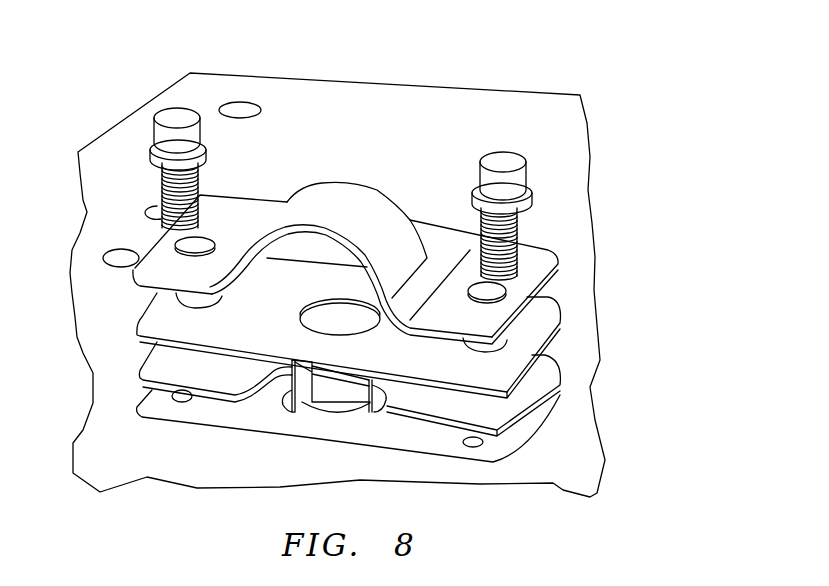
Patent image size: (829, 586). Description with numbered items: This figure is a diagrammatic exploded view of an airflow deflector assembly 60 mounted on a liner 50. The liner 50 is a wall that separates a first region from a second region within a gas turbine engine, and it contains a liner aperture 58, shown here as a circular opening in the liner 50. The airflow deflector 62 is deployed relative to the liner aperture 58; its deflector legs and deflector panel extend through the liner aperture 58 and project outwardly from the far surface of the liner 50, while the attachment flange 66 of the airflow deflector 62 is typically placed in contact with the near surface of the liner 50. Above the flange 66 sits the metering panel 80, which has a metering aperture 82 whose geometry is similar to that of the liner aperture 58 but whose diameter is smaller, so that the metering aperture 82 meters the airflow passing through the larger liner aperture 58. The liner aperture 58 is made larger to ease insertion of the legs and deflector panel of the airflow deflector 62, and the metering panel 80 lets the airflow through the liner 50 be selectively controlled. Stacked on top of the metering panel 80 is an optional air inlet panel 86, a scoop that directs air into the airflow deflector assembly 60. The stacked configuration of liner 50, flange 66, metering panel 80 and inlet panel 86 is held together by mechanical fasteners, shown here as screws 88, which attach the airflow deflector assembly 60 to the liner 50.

The liner 50 is at (565, 438).
The liner aperture 58 is at (283, 413).
The airflow deflector assembly 60 is at (618, 291).
The airflow deflector 62 is at (126, 394).
The attachment flange 66 is at (398, 410).
The metering panel 80 is at (291, 308).
The metering aperture 82 is at (342, 317).
The air inlet panel 86 is at (338, 205).
The screws 88 is at (170, 120).